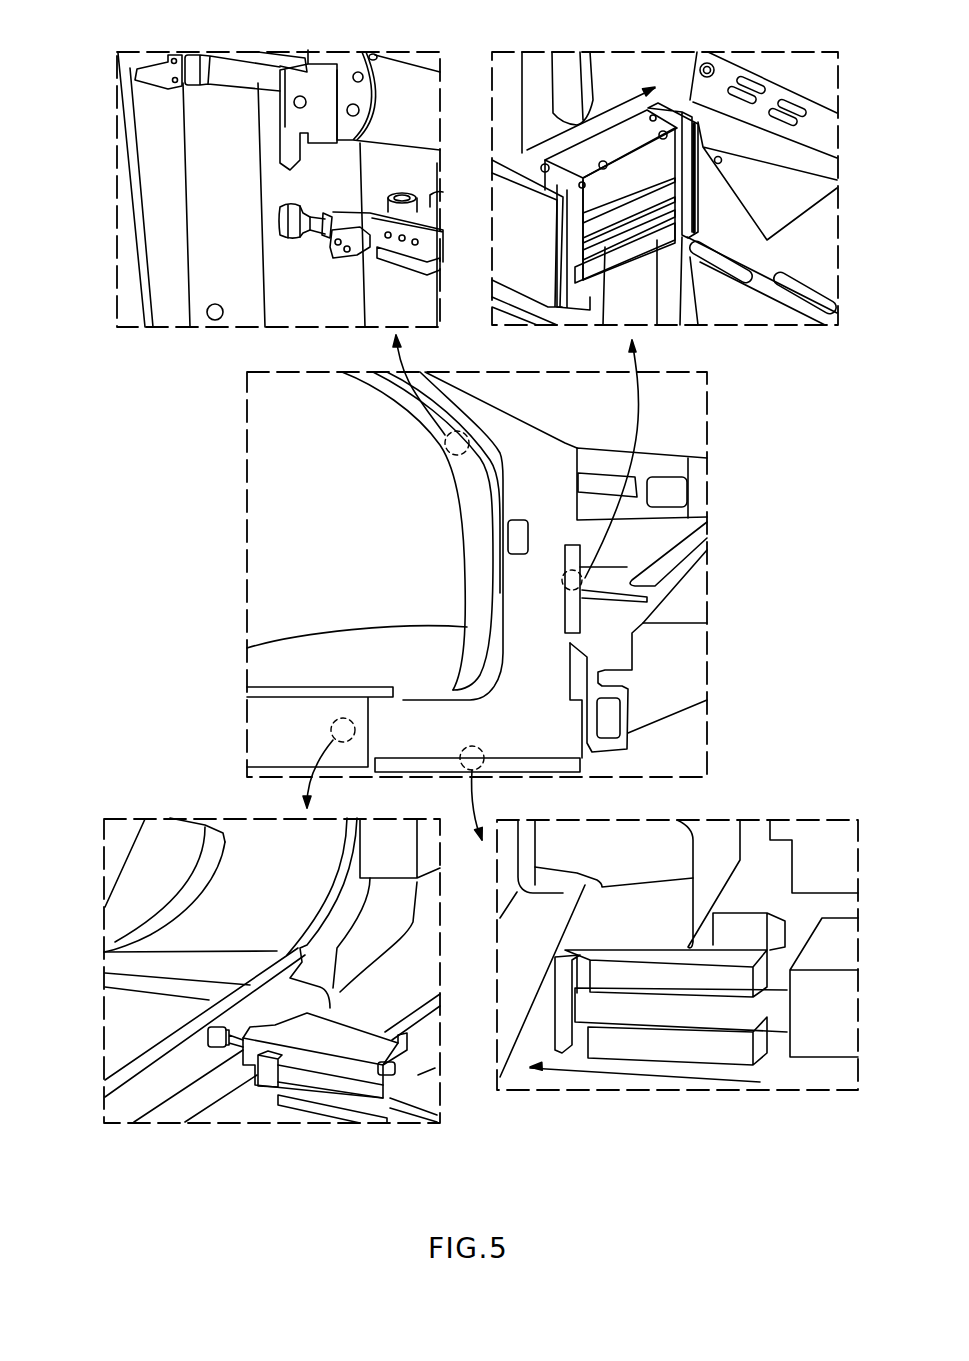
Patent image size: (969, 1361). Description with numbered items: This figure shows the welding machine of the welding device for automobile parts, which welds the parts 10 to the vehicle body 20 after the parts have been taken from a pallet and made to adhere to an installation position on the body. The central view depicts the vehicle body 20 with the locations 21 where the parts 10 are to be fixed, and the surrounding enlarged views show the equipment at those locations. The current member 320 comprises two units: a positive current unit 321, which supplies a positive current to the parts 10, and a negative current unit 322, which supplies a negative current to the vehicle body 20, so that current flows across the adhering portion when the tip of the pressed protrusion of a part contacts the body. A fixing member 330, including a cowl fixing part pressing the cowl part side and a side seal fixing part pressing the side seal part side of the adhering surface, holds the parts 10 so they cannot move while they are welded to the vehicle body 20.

The parts 10 is at (280, 265).
The vehicle body 20 is at (137, 275).
The hinge mounting portion 21 is at (337, 720).
The current member 320 is at (93, 418).
The positive (+) current unit 321 is at (377, 255).
The negative (−) current unit 322 is at (308, 1033).
The fixing member 330 is at (692, 230).